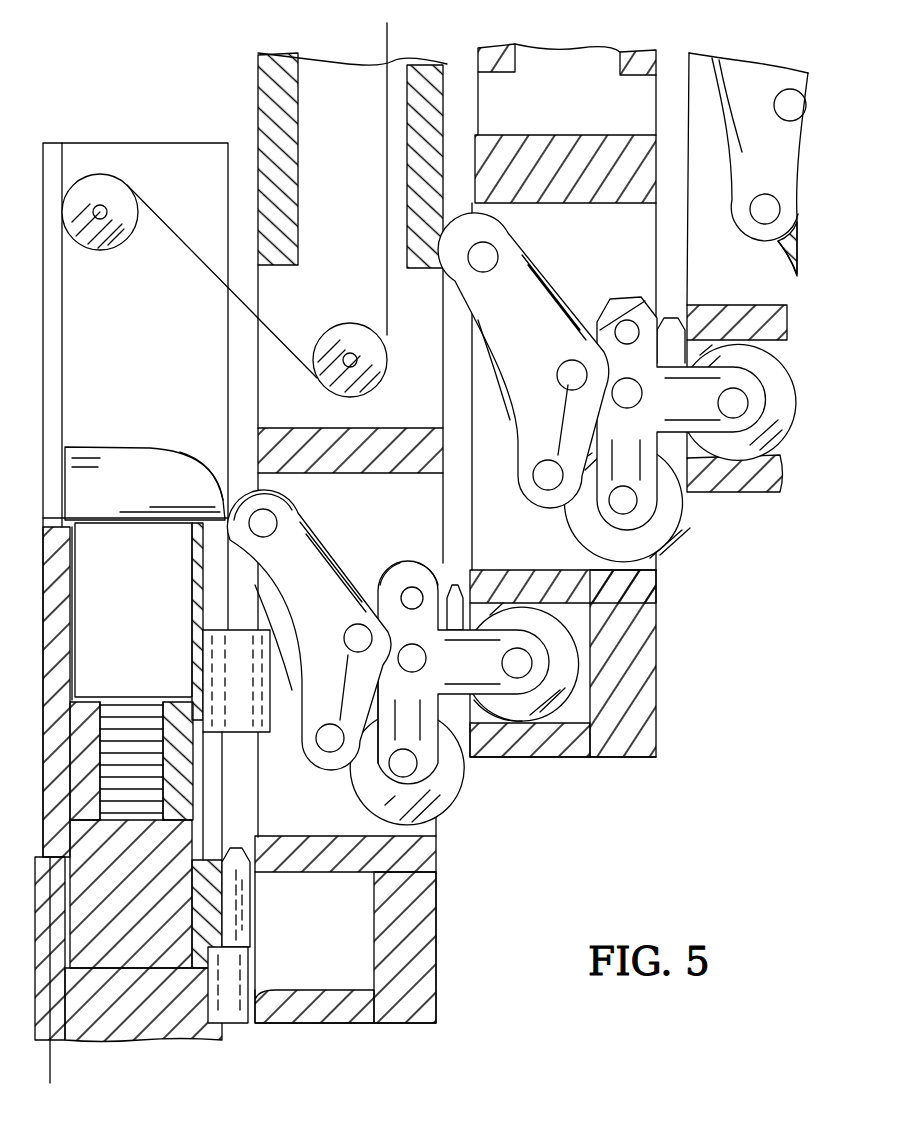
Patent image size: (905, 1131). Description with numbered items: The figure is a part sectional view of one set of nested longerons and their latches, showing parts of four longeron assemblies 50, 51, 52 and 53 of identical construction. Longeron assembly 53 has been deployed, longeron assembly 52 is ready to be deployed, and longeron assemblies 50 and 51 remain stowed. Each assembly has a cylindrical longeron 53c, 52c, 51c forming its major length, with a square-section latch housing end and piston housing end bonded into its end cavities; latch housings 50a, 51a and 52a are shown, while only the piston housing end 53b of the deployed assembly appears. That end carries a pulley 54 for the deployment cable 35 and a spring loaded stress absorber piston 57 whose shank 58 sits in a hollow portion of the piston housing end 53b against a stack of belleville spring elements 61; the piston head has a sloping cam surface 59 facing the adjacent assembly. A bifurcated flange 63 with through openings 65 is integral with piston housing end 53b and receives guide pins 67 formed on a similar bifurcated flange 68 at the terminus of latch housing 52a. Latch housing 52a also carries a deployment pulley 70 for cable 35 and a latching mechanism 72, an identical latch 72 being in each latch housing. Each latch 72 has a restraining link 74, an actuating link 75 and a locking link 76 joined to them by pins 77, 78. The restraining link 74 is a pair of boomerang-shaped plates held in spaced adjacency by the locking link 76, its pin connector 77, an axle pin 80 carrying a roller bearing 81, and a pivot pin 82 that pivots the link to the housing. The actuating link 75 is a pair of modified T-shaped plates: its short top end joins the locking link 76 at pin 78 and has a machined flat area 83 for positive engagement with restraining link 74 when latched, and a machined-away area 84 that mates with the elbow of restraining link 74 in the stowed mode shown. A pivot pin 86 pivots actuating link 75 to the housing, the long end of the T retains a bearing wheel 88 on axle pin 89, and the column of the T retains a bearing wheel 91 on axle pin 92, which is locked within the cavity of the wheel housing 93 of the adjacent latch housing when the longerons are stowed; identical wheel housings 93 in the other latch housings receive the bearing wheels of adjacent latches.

The deployment cable 35 is at (287, 342).
The longeron assembly 50 is at (695, 494).
The latch housing 50a is at (734, 177).
The longeron assembly 51 is at (658, 735).
The latch housing 51a is at (566, 258).
The cylindrical longeron 51c is at (626, 50).
The longeron assembly 52 is at (438, 985).
The latch housing 52a is at (315, 233).
The cylindrical longeron 52c is at (286, 53).
The longeron assembly 53 is at (165, 1047).
The piston housing end 53b is at (72, 572).
The cylindrical longeron 53c is at (62, 1045).
The pulley 54 is at (122, 190).
The stress absorber piston 57 is at (113, 465).
The shank 58 is at (121, 631).
The cam surface 59 is at (216, 480).
The belleville spring elements 61 is at (180, 792).
The bifurcated flange 63 is at (248, 730).
The through openings 65 is at (230, 750).
The guide pins 67 is at (250, 905).
The bifurcated flange 68 is at (250, 976).
The deployment pulley 70 is at (383, 372).
The longeron latching mechanism 72 is at (768, 240).
The restraining link 74 is at (284, 598).
The actuating link 75 is at (448, 667).
The locking link 76 is at (392, 590).
The pin connector 77 is at (344, 636).
The pin connector 78 is at (430, 572).
The axle pin 80 is at (278, 522).
The roller bearing 81 is at (290, 492).
The pivot pin 82 is at (330, 724).
The flat area 83 is at (404, 588).
The machined-away area 84 is at (386, 642).
The pivot pin 86 is at (406, 672).
The bearing wheel 88 is at (444, 808).
The axle pin 89 is at (390, 770).
The bearing wheel 91 is at (512, 746).
The axle pin 92 is at (532, 662).
The wheel housing 93 is at (343, 995).